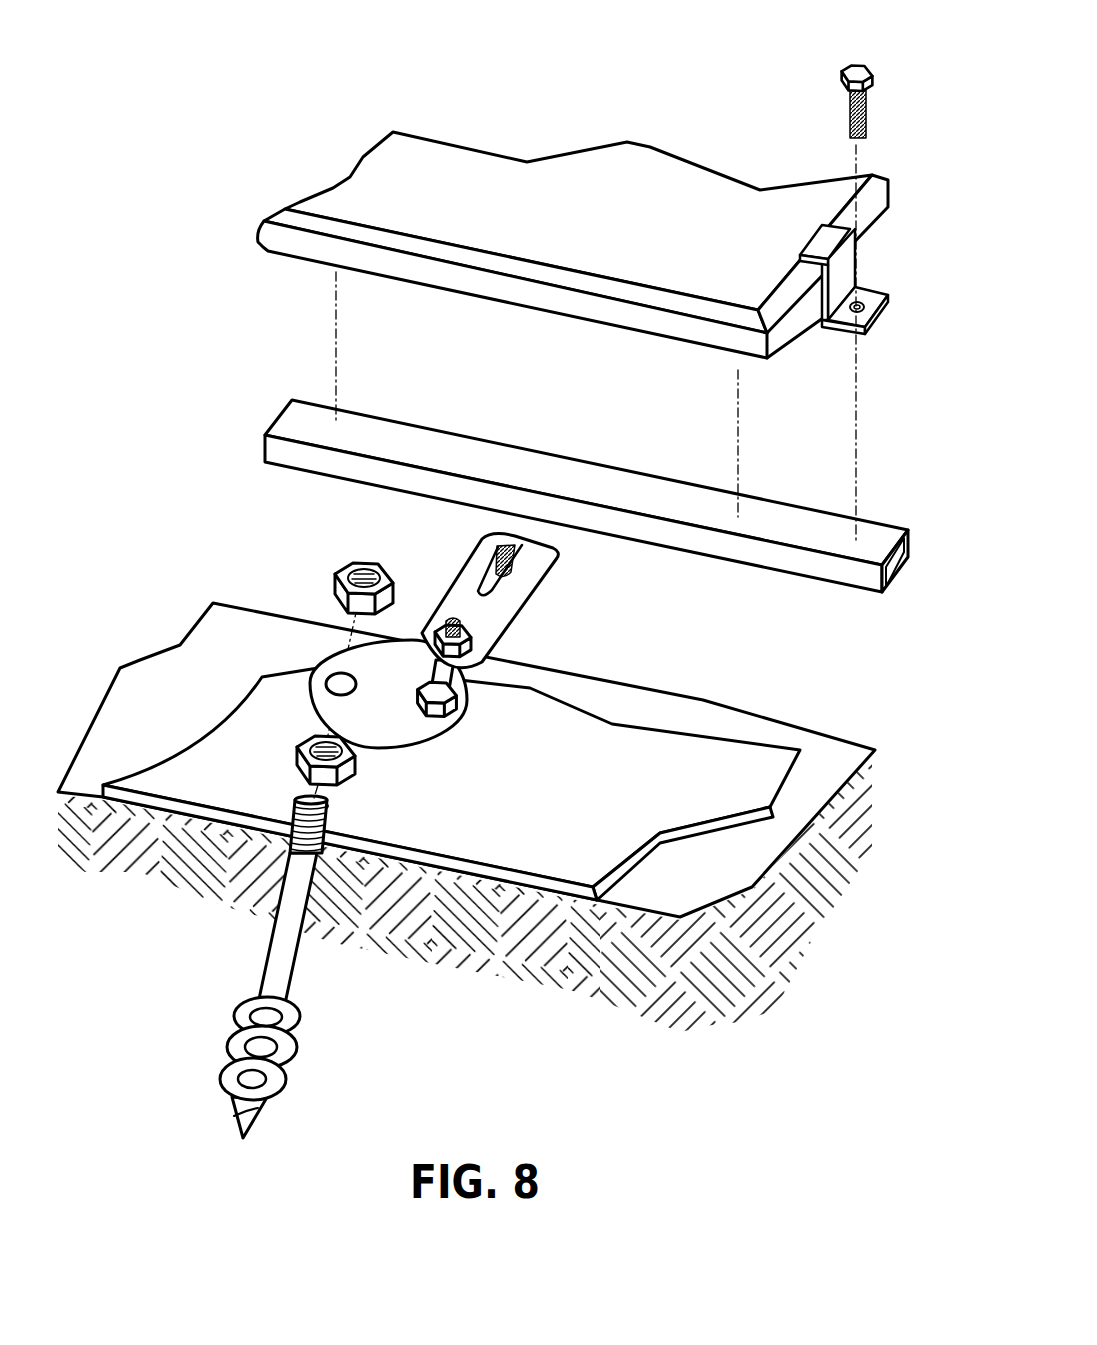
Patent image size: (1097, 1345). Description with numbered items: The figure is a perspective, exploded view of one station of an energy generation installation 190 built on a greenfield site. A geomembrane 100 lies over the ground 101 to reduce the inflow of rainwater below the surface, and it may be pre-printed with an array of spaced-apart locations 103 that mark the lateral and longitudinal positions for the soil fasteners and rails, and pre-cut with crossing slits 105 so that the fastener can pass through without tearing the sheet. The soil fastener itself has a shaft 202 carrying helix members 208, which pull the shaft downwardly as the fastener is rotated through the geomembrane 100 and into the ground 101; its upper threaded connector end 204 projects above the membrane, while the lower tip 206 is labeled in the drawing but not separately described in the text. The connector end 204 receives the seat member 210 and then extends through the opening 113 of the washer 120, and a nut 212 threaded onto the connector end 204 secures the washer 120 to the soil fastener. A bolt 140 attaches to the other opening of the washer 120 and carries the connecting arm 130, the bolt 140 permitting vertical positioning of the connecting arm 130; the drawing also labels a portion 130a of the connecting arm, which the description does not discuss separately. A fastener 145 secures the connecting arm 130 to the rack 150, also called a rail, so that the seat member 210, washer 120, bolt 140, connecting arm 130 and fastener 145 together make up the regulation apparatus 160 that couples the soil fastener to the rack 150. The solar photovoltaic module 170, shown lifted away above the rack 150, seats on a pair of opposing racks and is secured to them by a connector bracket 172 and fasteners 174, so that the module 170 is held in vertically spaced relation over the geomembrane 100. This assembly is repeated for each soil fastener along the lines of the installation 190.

The geomembrane 100 is at (582, 834).
The ground 101 is at (522, 1027).
The spaced-apart locations 103 is at (293, 823).
The crossing slits 105 is at (266, 805).
The opening 113 is at (313, 692).
The washer 120 is at (412, 722).
The connecting arm 130 is at (488, 613).
The slot 130a is at (482, 583).
The bolt 140 is at (482, 663).
The fastener 145 is at (520, 562).
The rack 150 is at (668, 538).
The regulation apparatus 160 is at (446, 598).
The solar photovoltaic module 170 is at (647, 178).
The connector bracket 172 is at (882, 318).
The fasteners 174 is at (870, 107).
The energy generation installation 190 is at (232, 385).
The shaft 202 is at (283, 952).
The connector end 204 is at (340, 820).
The tip 206 is at (240, 1138).
The helix members 208 is at (236, 998).
The seat member 210 is at (354, 768).
The nut 212 is at (333, 586).